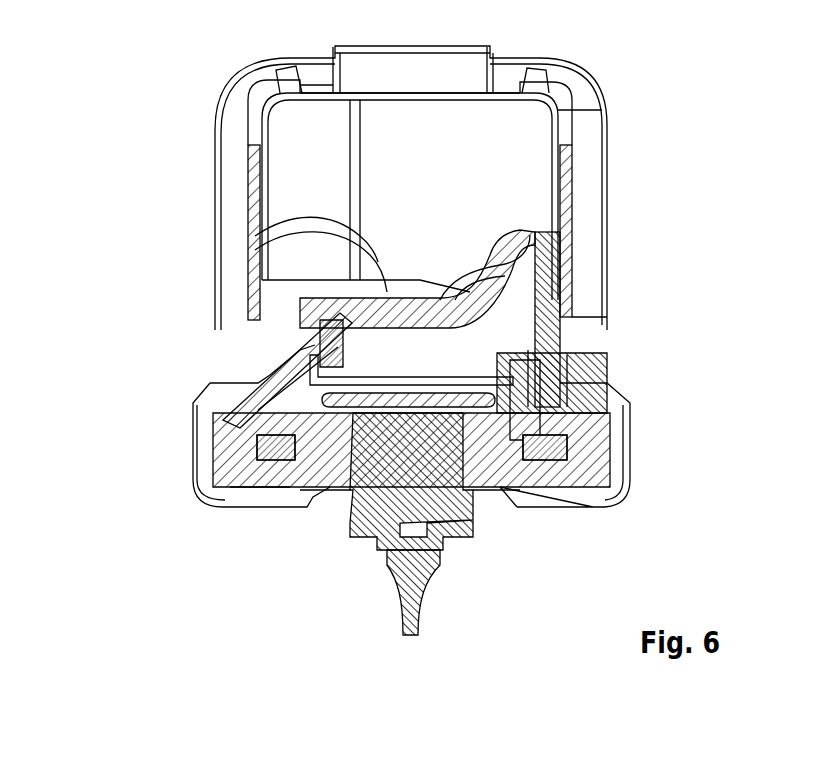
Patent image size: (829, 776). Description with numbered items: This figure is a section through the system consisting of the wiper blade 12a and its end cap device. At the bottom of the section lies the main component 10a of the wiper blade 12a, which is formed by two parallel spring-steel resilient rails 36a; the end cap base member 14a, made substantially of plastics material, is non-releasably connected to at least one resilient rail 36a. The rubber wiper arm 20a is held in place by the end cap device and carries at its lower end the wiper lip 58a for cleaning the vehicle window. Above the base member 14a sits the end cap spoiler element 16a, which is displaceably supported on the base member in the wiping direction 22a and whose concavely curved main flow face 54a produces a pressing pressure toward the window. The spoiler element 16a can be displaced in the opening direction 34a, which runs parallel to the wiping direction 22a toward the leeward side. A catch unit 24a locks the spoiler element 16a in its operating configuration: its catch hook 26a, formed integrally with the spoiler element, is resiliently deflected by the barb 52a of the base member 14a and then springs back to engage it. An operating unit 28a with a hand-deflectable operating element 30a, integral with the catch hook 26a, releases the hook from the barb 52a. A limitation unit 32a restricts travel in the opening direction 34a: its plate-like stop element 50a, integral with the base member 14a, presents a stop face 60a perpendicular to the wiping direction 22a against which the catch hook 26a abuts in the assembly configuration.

The wiper blade 12a is at (131, 211).
The end cap spoiler element 16a is at (555, 238).
The operating element 30a is at (340, 272).
The main flow face 54a is at (460, 274).
The operating unit 28a is at (300, 298).
The barb 52a is at (310, 320).
The catch unit 24a is at (300, 337).
The catch hook 26a is at (300, 347).
The wiping direction 22a is at (170, 380).
The opening direction 34a is at (625, 262).
The stop face 60a is at (555, 368).
The limitation unit 32a is at (545, 360).
The stop element 50a is at (615, 402).
The end cap base member 14a is at (237, 445).
The main component 10a is at (280, 457).
The resilient rails 36a is at (553, 460).
The wiper arm 20a is at (443, 500).
The wiper lip 58a is at (403, 632).